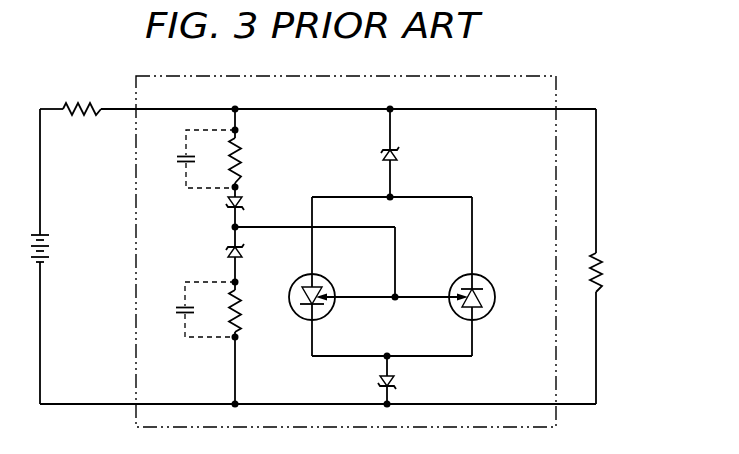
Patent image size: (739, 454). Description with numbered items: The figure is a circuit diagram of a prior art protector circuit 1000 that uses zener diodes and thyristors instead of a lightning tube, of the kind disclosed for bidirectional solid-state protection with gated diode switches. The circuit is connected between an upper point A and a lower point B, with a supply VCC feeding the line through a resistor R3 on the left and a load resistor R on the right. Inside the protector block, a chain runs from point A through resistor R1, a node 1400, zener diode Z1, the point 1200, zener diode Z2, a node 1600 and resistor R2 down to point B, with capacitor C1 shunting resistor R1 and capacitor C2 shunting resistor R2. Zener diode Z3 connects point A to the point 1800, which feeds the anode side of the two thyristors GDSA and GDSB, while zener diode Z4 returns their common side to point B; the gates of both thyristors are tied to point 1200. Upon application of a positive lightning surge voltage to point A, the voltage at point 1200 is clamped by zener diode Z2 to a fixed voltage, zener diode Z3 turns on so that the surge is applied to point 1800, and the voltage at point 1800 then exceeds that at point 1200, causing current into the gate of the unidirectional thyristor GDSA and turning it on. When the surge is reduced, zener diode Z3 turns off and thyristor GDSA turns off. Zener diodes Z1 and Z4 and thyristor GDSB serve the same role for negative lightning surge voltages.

The protector circuit 1000 is at (566, 64).
The point 1200 is at (215, 225).
The node between resistor R1 and zener diode Z1 1400 is at (256, 187).
The node between zener diode Z2 and resistor R2 1600 is at (255, 282).
The point 1800 is at (389, 210).
The resistor R1 is at (242, 154).
The resistor R2 is at (242, 306).
The resistor R3 is at (73, 102).
The load resistor R is at (602, 270).
The capacitor C1 is at (178, 155).
The capacitor C2 is at (175, 307).
The zener diode Z1 is at (243, 208).
The zener diode Z2 is at (243, 252).
The zener diode Z3 is at (399, 154).
The zener diode Z4 is at (395, 381).
The supply voltage source VCC is at (50, 246).
The unidirectional thyristor GDSA is at (344, 303).
The thyristor GDSB is at (471, 295).
The point A is at (235, 100).
The node B is at (235, 414).